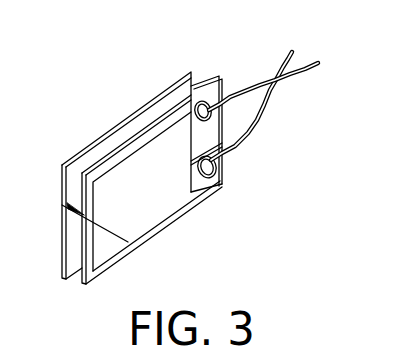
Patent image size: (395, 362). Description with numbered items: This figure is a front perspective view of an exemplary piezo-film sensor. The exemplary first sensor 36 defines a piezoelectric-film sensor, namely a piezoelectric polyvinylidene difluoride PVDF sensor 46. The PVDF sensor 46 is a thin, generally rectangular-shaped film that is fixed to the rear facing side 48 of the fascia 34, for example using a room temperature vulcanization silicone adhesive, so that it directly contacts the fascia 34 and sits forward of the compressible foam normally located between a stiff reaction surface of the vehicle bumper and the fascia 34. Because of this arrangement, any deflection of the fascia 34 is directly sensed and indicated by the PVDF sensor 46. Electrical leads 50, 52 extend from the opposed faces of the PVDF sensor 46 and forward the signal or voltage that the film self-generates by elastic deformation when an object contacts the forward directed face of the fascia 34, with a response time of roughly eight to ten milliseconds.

The fascia 34 is at (96, 142).
The first sensor 36 is at (84, 78).
The PVDF sensor 46 is at (142, 198).
The rear facing side 48 is at (121, 238).
The electrical lead 50 is at (255, 133).
The electrical lead 52 is at (302, 82).